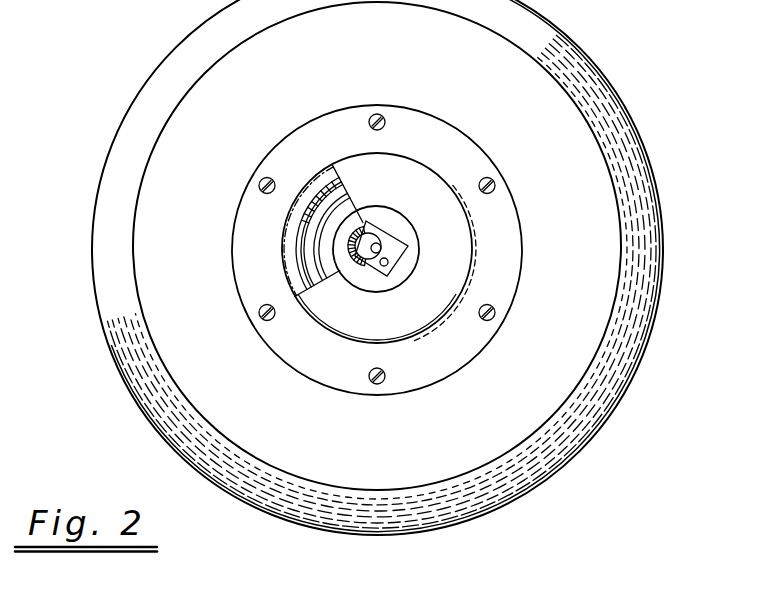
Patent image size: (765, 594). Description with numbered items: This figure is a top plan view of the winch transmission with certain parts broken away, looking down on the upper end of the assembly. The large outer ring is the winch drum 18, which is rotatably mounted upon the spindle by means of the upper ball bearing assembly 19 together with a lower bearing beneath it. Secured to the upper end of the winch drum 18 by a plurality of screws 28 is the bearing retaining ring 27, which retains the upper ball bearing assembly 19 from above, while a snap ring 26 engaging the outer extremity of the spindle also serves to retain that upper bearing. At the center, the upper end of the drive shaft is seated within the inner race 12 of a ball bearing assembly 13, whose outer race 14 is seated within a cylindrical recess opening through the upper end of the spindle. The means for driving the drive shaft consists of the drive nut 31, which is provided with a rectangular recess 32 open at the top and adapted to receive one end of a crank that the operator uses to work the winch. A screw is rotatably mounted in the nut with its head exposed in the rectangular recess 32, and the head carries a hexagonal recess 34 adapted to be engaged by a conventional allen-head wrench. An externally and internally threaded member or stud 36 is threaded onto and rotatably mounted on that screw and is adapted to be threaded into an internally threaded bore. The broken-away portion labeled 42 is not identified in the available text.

The inner race 12 is at (344, 170).
The ball bearing assembly 13 is at (347, 268).
The outer race 14 is at (335, 276).
The winch drum 18 is at (126, 325).
The upper ball bearing assembly 19 is at (292, 262).
The snap ring 26 is at (323, 205).
The bearing retaining ring 27 is at (503, 250).
The screws 28 is at (386, 121).
The drive nut 31 is at (399, 200).
The rectangular recess 32 is at (388, 260).
The hexagonal recess 34 is at (392, 242).
The member or stud 36 is at (370, 230).
The retaining ring 42 is at (300, 238).